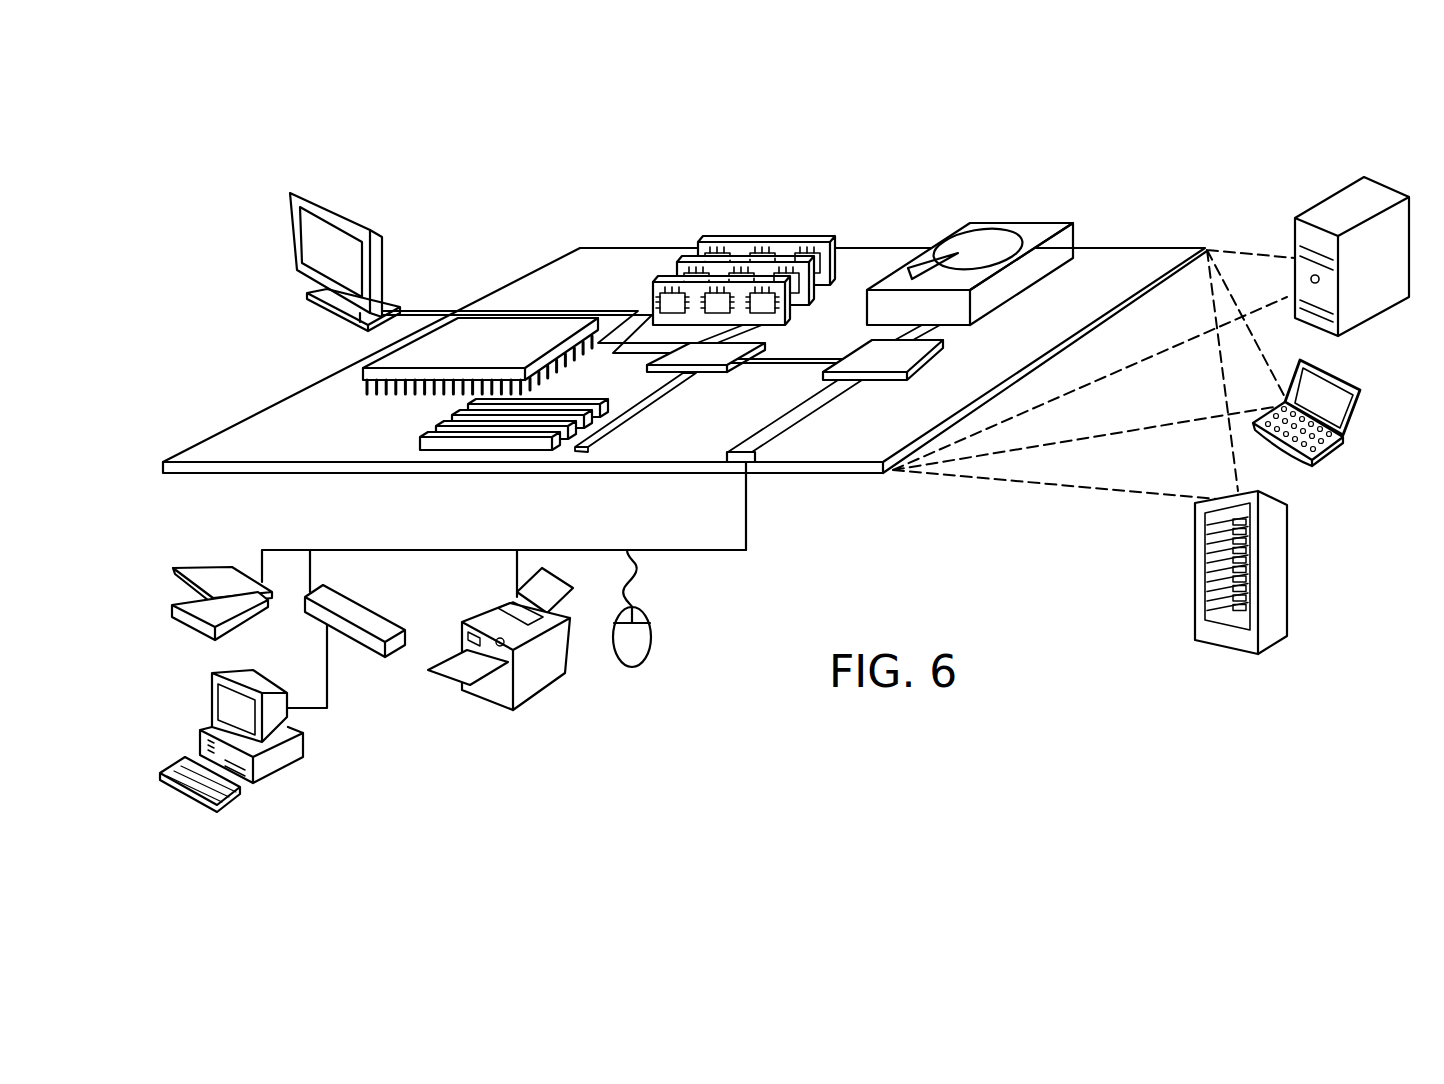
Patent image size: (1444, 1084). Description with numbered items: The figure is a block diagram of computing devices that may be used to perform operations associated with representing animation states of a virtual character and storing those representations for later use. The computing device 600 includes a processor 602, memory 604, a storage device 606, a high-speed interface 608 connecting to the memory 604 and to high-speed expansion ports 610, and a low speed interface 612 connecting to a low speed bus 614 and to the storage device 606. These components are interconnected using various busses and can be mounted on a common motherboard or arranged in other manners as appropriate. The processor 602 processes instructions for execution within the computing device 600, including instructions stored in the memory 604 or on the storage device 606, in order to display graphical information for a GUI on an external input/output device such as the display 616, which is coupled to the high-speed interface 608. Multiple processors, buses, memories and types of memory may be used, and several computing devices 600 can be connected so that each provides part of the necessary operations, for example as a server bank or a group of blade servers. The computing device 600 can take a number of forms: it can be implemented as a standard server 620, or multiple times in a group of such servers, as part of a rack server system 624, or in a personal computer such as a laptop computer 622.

The computing device 600 is at (548, 186).
The processor 602 is at (362, 375).
The memory 604 is at (740, 238).
The storage device 606 is at (973, 223).
The high-speed interface 608 is at (698, 348).
The high-speed expansion ports 610 is at (423, 432).
The low speed interface 612 is at (877, 350).
The low speed bus 614 is at (770, 459).
The display 616 is at (290, 228).
The standard server 620 is at (1328, 195).
The laptop computer 622 is at (1336, 375).
The rack server system 624 is at (1201, 571).